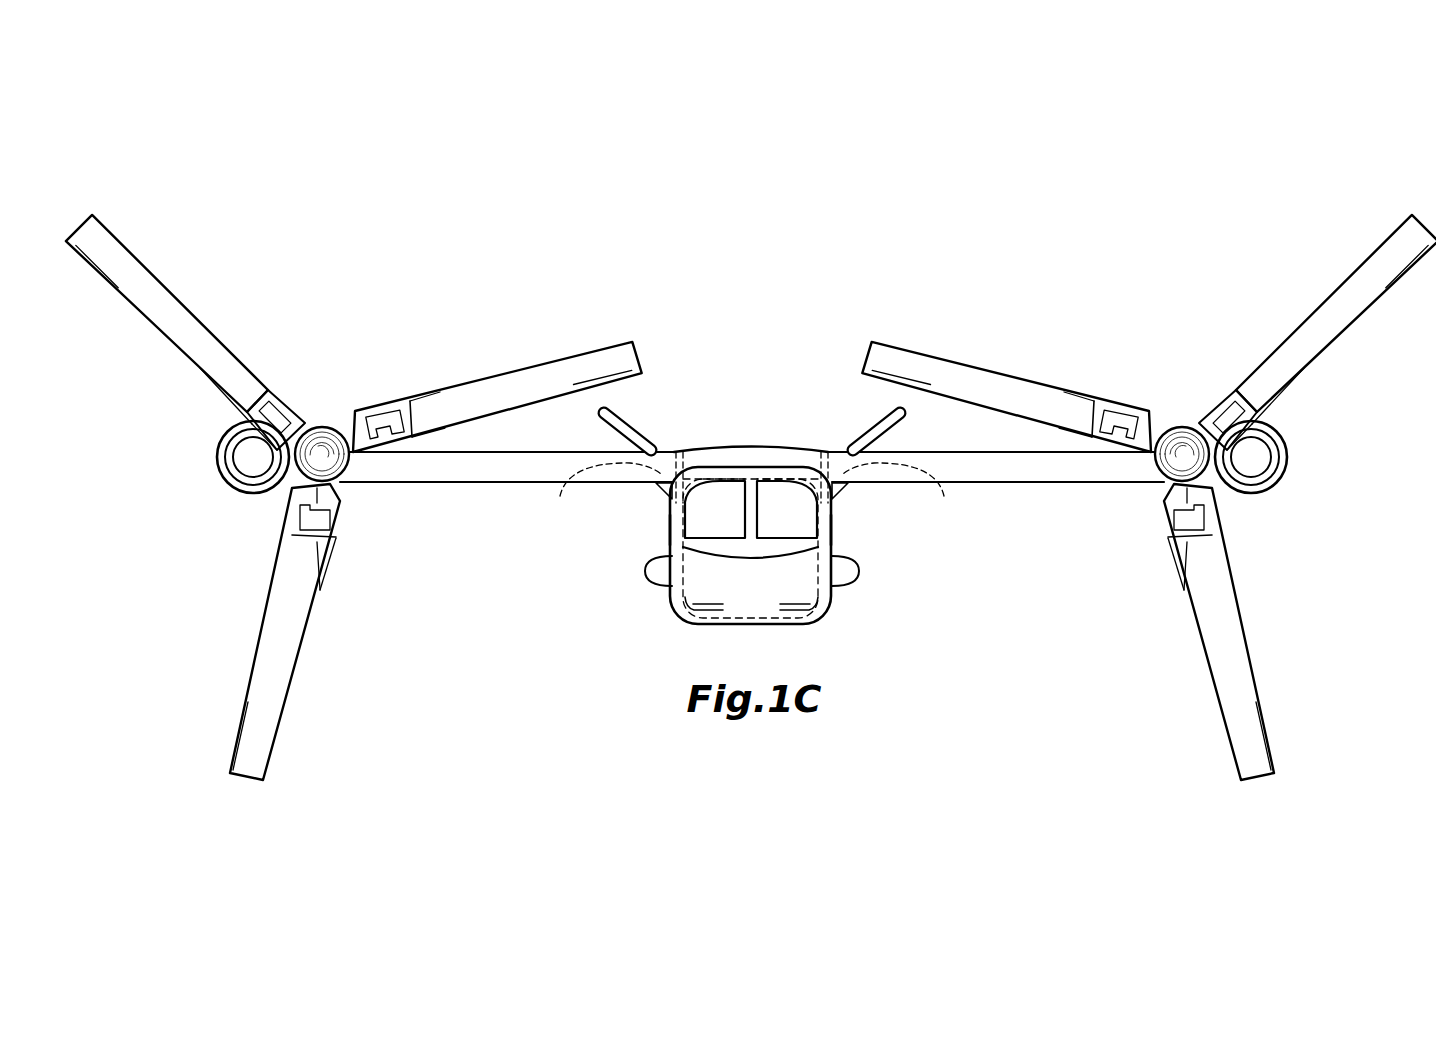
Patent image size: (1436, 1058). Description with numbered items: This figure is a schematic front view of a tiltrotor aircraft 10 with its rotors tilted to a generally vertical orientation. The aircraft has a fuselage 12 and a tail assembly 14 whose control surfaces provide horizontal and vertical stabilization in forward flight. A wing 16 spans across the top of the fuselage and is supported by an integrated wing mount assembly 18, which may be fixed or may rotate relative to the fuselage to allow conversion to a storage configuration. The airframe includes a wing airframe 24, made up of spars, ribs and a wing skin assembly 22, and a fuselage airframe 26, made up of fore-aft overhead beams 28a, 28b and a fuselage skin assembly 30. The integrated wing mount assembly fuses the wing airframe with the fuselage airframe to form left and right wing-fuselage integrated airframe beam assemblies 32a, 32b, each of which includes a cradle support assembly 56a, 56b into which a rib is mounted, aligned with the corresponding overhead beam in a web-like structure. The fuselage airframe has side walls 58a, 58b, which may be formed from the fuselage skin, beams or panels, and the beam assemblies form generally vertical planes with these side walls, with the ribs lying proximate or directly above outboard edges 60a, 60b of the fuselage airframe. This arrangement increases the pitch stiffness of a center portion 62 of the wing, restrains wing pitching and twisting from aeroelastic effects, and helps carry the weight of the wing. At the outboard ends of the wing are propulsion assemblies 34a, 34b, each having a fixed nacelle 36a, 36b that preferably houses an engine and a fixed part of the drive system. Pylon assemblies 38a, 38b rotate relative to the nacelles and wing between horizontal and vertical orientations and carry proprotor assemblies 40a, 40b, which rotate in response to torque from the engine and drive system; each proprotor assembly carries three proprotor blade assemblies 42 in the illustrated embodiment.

The tiltrotor aircraft 10 is at (705, 232).
The fuselage 12 is at (666, 598).
The tail assembly 14 is at (641, 430).
The wing 16 is at (377, 486).
The integrated wing mount assembly 18 is at (776, 441).
The wing skin assembly 22 is at (431, 486).
The wing airframe 24 is at (486, 486).
The fuselage airframe 26 is at (835, 598).
The fore-aft overhead beam 28a is at (834, 494).
The fore-aft overhead beam 28b is at (670, 494).
The fuselage skin assembly 30 is at (822, 623).
The left wing-fuselage integrated airframe beam assembly 32a is at (900, 491).
The right wing-fuselage integrated airframe beam assembly 32b is at (602, 491).
The propulsion assembly 34a is at (1275, 497).
The propulsion assembly 34b is at (229, 497).
The fixed nacelle 36a is at (1287, 461).
The fixed nacelle 36b is at (217, 461).
The pylon assembly 38a is at (1182, 428).
The pylon assembly 38b is at (322, 428).
The proprotor assembly 40a is at (1171, 428).
The proprotor assembly 40b is at (333, 428).
The proprotor blade assembly 42 is at (122, 293).
The cradle support assembly 56a is at (809, 448).
The cradle support assembly 56b is at (694, 448).
The side wall 58a is at (858, 556).
The side wall 58b is at (646, 556).
The outboard edge 60a is at (836, 528).
The outboard edge 60b is at (668, 528).
The center portion 62 is at (742, 447).